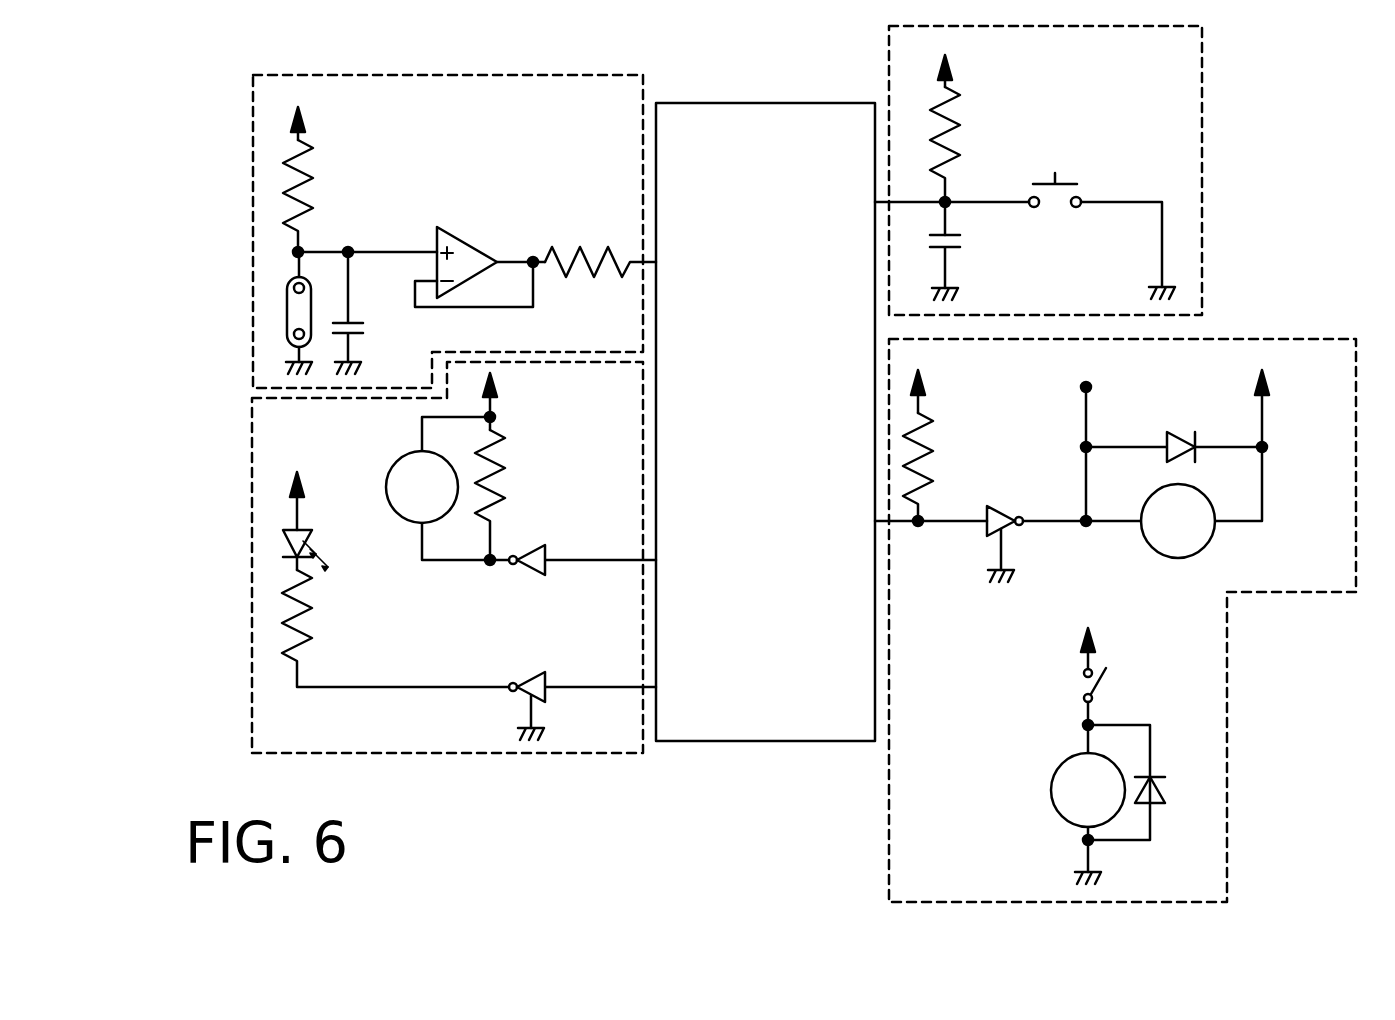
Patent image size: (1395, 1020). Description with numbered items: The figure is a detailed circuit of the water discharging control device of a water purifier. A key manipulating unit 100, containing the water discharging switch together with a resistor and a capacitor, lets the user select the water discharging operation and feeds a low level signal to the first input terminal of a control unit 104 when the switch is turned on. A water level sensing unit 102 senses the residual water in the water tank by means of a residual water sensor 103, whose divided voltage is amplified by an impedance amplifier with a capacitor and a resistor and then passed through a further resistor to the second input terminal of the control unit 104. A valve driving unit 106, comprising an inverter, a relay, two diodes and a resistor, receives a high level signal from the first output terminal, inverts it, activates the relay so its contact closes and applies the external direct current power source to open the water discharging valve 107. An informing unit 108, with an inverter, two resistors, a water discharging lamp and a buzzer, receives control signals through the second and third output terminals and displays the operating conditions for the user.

The key manipulating unit 100 is at (1208, 138).
The water level sensing unit 102 is at (250, 106).
The residual water sensor 103 is at (286, 314).
The control unit 104 is at (759, 103).
The valve driving unit 106 is at (1229, 693).
The water discharging valve 107 is at (1052, 773).
The informing unit 108 is at (250, 492).